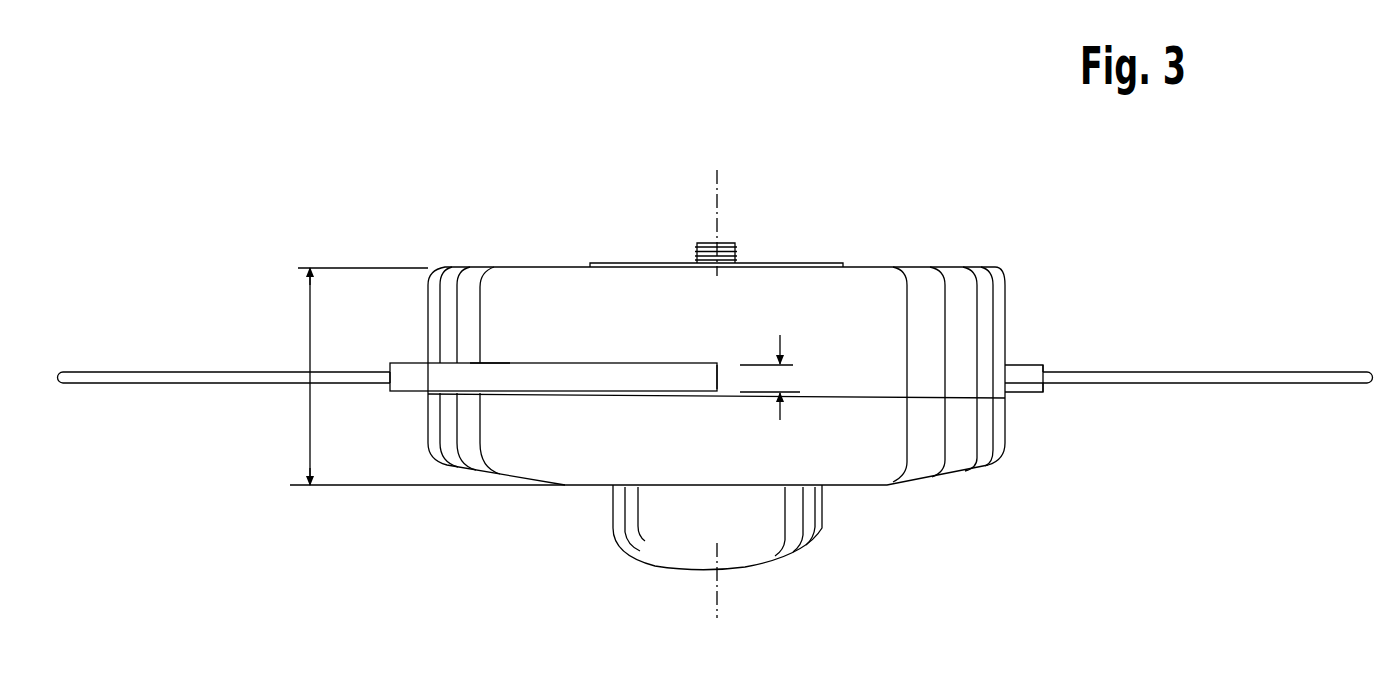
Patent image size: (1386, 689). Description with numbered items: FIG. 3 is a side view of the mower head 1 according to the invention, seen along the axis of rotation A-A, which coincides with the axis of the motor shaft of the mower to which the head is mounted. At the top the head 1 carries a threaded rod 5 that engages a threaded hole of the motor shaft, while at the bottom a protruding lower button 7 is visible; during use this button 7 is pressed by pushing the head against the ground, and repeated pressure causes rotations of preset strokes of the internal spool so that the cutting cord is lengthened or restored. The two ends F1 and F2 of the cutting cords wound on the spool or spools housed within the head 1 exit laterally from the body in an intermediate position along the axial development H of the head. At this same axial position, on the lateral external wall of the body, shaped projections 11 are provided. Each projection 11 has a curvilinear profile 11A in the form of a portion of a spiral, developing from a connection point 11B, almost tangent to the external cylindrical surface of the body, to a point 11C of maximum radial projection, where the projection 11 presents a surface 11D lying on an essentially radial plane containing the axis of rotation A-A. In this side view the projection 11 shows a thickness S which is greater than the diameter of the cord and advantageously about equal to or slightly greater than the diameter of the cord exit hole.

The mower head 1 is at (924, 246).
The threaded rod 5 is at (738, 257).
The lower button 7 is at (641, 532).
The projection 11 is at (725, 375).
The curvilinear profile 11A is at (489, 377).
The connection point 11B is at (718, 373).
The point of maximum radial projection 11C is at (388, 384).
The surface 11D is at (1040, 393).
The cutting cord end F1 is at (180, 378).
The cutting cord end F2 is at (1183, 375).
The axial development H is at (424, 376).
The thickness S is at (770, 377).
The axis of rotation A is at (716, 394).